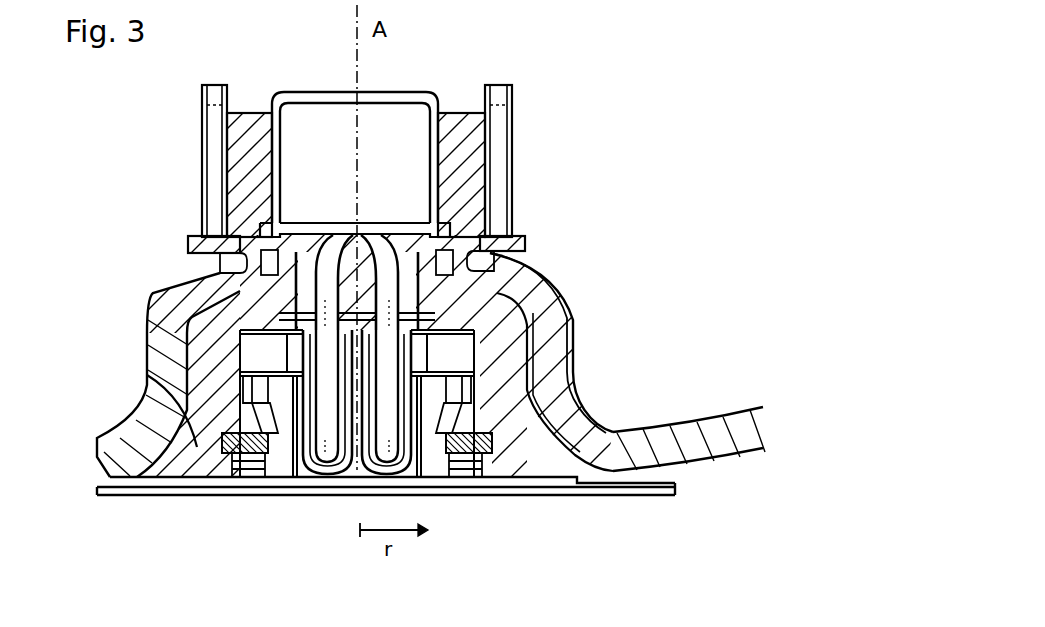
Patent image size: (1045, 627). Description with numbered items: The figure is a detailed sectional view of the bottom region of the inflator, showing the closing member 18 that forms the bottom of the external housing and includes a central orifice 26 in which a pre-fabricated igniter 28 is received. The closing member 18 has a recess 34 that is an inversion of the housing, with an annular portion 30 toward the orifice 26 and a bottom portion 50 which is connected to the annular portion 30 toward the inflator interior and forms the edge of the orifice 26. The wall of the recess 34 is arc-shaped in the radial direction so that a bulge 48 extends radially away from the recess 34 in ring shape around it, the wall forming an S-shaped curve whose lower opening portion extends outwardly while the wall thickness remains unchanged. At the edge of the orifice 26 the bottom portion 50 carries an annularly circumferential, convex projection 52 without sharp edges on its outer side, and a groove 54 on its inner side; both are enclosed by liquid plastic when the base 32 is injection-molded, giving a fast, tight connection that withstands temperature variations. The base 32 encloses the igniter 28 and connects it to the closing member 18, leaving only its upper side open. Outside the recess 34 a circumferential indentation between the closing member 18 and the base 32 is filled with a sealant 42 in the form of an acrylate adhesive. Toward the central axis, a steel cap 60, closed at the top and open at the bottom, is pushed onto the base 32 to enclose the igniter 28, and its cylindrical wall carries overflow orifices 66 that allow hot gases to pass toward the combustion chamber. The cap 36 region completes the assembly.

The closing member 18 is at (690, 425).
The central orifice 26 is at (435, 240).
The igniter 28 is at (413, 118).
The annular portion 30 is at (147, 352).
The base 32 is at (470, 165).
The recess 34 is at (197, 447).
The cap 36 is at (323, 91).
The sealant 42 is at (573, 483).
The bulge 48 is at (472, 370).
The bottom portion 50 is at (195, 272).
The projection 52 is at (533, 258).
The groove 54 is at (195, 248).
The cap 60 is at (201, 139).
The overflow orifices 66 is at (512, 90).